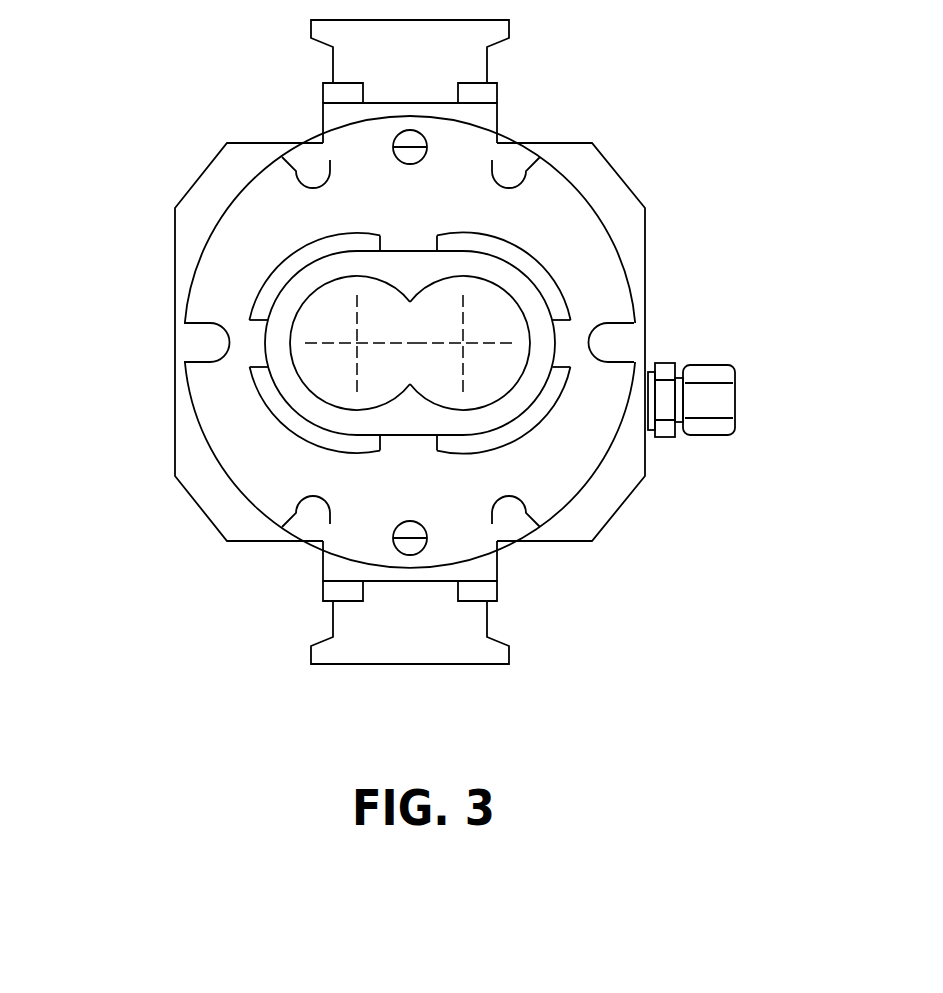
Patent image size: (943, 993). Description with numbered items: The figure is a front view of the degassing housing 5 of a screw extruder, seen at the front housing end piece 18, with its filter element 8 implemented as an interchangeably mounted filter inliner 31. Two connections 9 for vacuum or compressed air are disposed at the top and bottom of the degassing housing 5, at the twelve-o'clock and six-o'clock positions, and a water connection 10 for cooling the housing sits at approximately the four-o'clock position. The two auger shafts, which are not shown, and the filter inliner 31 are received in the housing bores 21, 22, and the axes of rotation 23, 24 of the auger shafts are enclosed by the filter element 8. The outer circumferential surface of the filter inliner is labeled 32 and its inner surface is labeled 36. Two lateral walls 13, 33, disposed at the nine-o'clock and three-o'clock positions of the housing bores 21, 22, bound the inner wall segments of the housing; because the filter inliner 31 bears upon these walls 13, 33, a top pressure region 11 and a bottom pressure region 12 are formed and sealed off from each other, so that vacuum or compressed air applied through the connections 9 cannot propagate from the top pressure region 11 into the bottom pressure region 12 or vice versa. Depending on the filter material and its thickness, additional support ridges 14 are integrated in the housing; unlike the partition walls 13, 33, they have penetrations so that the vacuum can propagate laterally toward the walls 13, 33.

The degassing housing 5 is at (698, 593).
The filter element 8 is at (420, 420).
The connections for vacuum or compressed air 9 is at (489, 62).
The water connection 10 is at (723, 362).
The top pressure region 11 is at (285, 267).
The bottom pressure region 12 is at (303, 427).
The lateral wall 13 is at (256, 334).
The support ridges 14 is at (403, 238).
The front housing end piece 18 is at (260, 200).
The housing bore 21 is at (268, 380).
The housing bore 22 is at (467, 443).
The axis of rotation 23 is at (353, 342).
The axis of rotation 24 is at (467, 340).
The filter inliner 31 is at (525, 387).
The outer circumferential surface of the filter inliner 32 is at (259, 358).
The lateral wall 33 is at (563, 337).
The inner surface of the filter inliner 36 is at (485, 285).